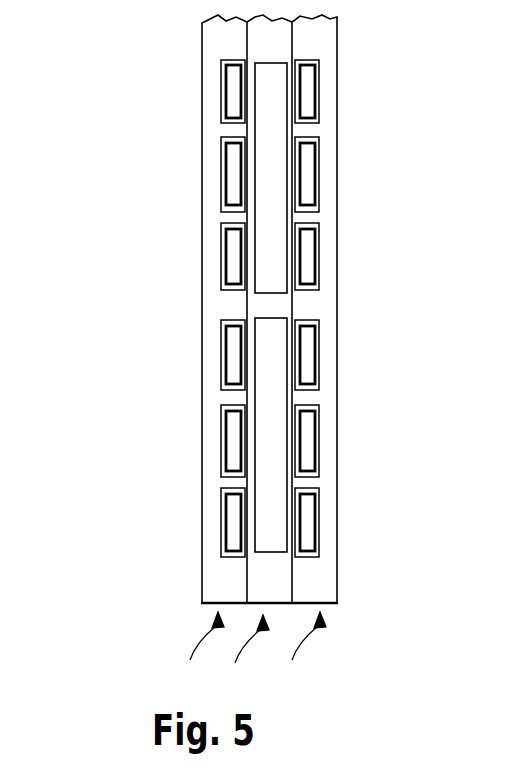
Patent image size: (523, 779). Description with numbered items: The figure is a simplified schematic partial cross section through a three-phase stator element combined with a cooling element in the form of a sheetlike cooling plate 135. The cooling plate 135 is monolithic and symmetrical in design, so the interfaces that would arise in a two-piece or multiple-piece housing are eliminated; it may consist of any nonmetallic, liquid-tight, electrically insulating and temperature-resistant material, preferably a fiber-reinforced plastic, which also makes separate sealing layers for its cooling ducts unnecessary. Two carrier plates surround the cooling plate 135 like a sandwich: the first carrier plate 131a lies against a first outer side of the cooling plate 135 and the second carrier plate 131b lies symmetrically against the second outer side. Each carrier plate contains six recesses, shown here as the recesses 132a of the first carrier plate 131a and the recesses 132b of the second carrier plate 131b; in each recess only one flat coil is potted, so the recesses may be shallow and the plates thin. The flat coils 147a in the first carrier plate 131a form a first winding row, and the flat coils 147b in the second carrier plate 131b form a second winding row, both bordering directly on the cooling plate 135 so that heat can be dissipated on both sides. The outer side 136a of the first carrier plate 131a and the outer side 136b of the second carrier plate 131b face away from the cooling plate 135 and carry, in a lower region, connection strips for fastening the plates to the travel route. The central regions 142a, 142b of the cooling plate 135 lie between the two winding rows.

The first carrier plate 131a is at (188, 657).
The second carrier plate 131b is at (311, 656).
The cooling plate 135 is at (243, 658).
The recesses of first carrier plate 132a is at (224, 275).
The recesses of second carrier plate 132b is at (316, 94).
The outer side of first carrier plate 136a is at (201, 319).
The outer side of second carrier plate 136b is at (338, 53).
The first partition section 142a is at (287, 265).
The second partition section 142b is at (287, 340).
The flat coils of first winding row 147a is at (219, 248).
The flat coils of second winding row 147b is at (320, 103).